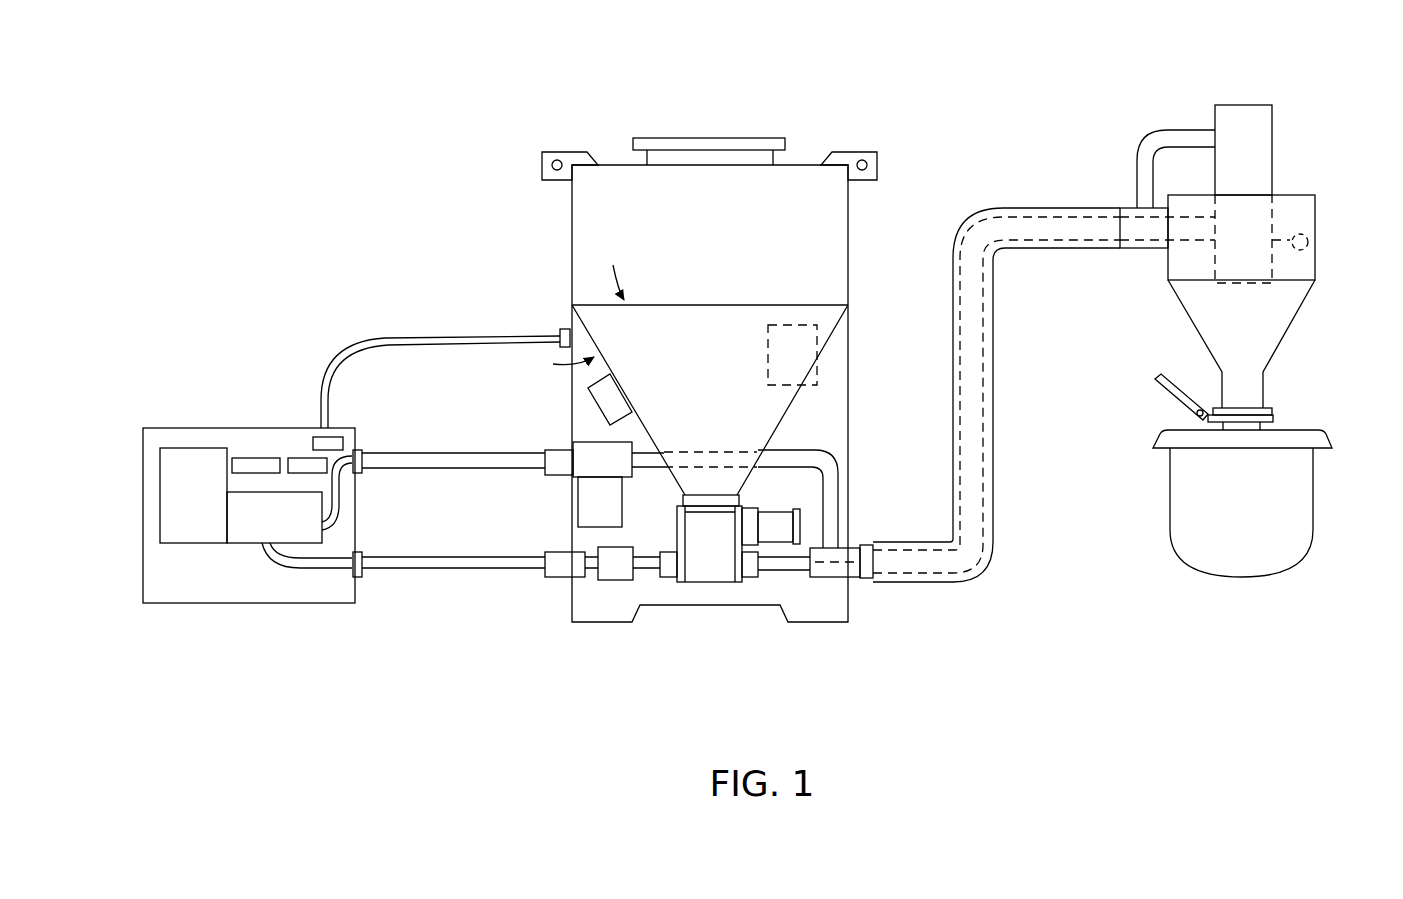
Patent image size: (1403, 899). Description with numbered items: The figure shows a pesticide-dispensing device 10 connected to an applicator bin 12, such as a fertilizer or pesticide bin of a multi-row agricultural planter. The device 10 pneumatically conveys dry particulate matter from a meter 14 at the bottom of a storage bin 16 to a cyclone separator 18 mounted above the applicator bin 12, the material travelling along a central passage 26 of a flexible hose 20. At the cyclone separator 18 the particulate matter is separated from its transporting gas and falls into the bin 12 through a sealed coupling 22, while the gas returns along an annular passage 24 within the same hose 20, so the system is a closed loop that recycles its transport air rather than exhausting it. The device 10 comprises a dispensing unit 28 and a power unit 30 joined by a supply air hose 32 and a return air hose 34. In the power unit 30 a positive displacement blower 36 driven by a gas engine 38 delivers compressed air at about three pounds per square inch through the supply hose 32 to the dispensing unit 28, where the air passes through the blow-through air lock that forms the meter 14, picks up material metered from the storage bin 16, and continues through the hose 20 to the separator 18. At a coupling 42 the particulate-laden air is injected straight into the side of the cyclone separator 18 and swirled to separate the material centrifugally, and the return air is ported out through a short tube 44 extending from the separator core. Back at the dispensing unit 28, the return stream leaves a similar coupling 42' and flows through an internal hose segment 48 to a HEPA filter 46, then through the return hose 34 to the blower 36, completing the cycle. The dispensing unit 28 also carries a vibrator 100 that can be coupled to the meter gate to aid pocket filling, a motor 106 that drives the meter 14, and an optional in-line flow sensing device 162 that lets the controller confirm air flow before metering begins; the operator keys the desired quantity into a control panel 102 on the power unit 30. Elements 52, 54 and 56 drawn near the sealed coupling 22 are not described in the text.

The pesticide-dispensing device 10 is at (782, 83).
The applicator bin 12 is at (1170, 483).
The meter 14 is at (705, 582).
The storage bin 16 is at (848, 247).
The cyclone separator 18 is at (1312, 290).
The flexible hose 20 is at (993, 415).
The sealed coupling 22 is at (1314, 422).
The annular passage 24 is at (985, 360).
The central passage 26 is at (973, 325).
The dispensing unit 28 is at (508, 220).
The power unit 30 is at (208, 384).
The supply air hose 32 is at (425, 556).
The return air hose 34 is at (432, 452).
The positive displacement blower 36 is at (240, 543).
The gas engine 38 is at (160, 505).
The coupling 42 is at (1165, 259).
The coupling 42' is at (857, 599).
The short tube 44 is at (1152, 129).
The HEPA filter 46 is at (572, 498).
The hose segment 48 is at (824, 450).
The flange 52 is at (1275, 418).
The lever 54 is at (1170, 400).
The flange 56 is at (1268, 408).
The vibrator 100 is at (588, 400).
The control panel 102 is at (818, 370).
The motor 106 is at (776, 512).
The in-line flow sensing device 162 is at (612, 582).